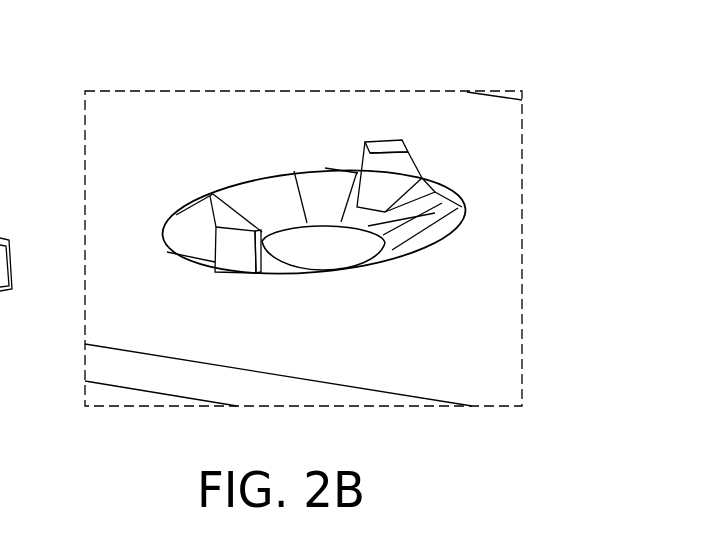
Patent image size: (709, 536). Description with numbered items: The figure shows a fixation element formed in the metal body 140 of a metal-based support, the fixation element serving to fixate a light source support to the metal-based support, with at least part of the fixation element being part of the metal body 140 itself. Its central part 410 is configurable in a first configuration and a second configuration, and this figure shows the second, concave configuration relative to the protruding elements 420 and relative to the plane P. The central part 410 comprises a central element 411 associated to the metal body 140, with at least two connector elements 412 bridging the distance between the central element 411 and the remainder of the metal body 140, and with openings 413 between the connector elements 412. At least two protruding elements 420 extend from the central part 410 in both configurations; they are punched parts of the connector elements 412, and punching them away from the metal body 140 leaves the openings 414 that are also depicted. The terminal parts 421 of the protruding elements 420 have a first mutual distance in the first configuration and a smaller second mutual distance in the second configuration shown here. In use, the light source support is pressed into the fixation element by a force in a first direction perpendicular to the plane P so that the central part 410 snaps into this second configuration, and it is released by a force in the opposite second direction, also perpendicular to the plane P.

The metal body 140 is at (450, 372).
The central part 410 is at (313, 248).
The central element 411 is at (343, 255).
The connector elements 412 is at (268, 202).
The openings 413 is at (212, 212).
The openings 414 is at (375, 197).
The protruding elements 420 is at (240, 258).
The terminal parts 421 is at (232, 252).
The plane P is at (0, 226).